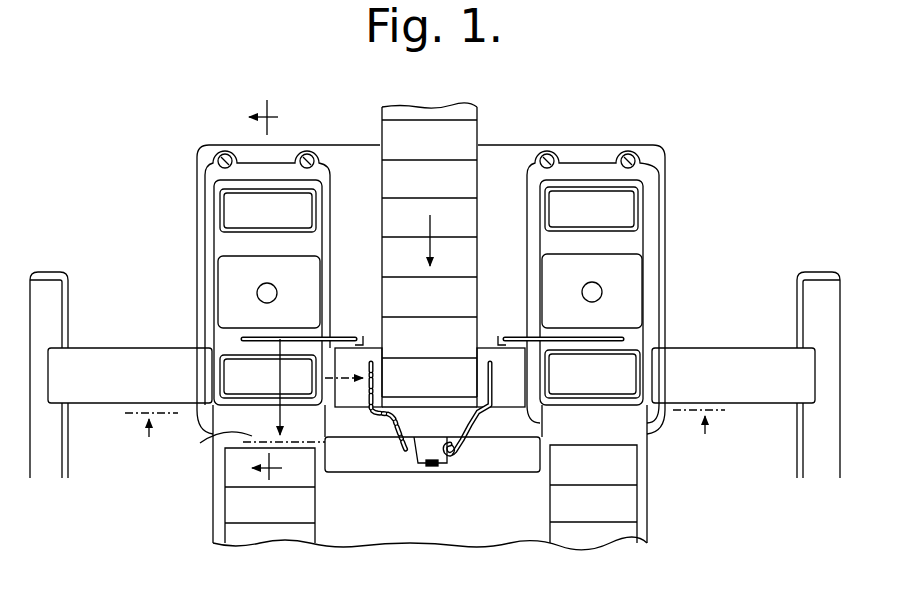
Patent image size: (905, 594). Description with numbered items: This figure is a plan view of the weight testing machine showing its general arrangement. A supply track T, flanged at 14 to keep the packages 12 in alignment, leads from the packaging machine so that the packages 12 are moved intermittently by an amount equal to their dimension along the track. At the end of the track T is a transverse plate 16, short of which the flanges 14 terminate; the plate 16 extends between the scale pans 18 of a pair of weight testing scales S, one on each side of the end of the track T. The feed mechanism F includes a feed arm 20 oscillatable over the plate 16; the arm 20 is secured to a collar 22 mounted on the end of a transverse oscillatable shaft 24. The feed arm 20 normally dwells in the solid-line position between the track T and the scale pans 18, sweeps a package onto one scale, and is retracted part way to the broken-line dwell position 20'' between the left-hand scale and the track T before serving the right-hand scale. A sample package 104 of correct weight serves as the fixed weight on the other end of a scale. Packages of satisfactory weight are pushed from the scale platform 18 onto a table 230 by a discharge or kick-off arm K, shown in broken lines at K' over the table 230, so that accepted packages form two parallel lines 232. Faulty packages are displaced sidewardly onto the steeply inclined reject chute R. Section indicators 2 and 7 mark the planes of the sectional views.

The packages 12 is at (465, 253).
The flanges 14 is at (380, 125).
The transverse plate 16 is at (353, 397).
The scale pans 18 is at (222, 357).
The feed arm 20 is at (460, 408).
The broken-line dwell position of feed arm 20'' is at (377, 388).
The collar 22 is at (425, 448).
The transverse oscillatable shaft 24 is at (430, 470).
The sample package 104 is at (228, 207).
The table 230 is at (330, 527).
The lines of accepted packages 232 is at (240, 505).
The weight testing scales S is at (213, 275).
The supply track T is at (480, 125).
The discharge arm K is at (432, 309).
The broken-line position of discharge arm K' is at (247, 453).
The reject chute R is at (105, 393).
The feed mechanism F is at (453, 463).
The section line 2 is at (275, 294).
The section line 7 is at (425, 438).